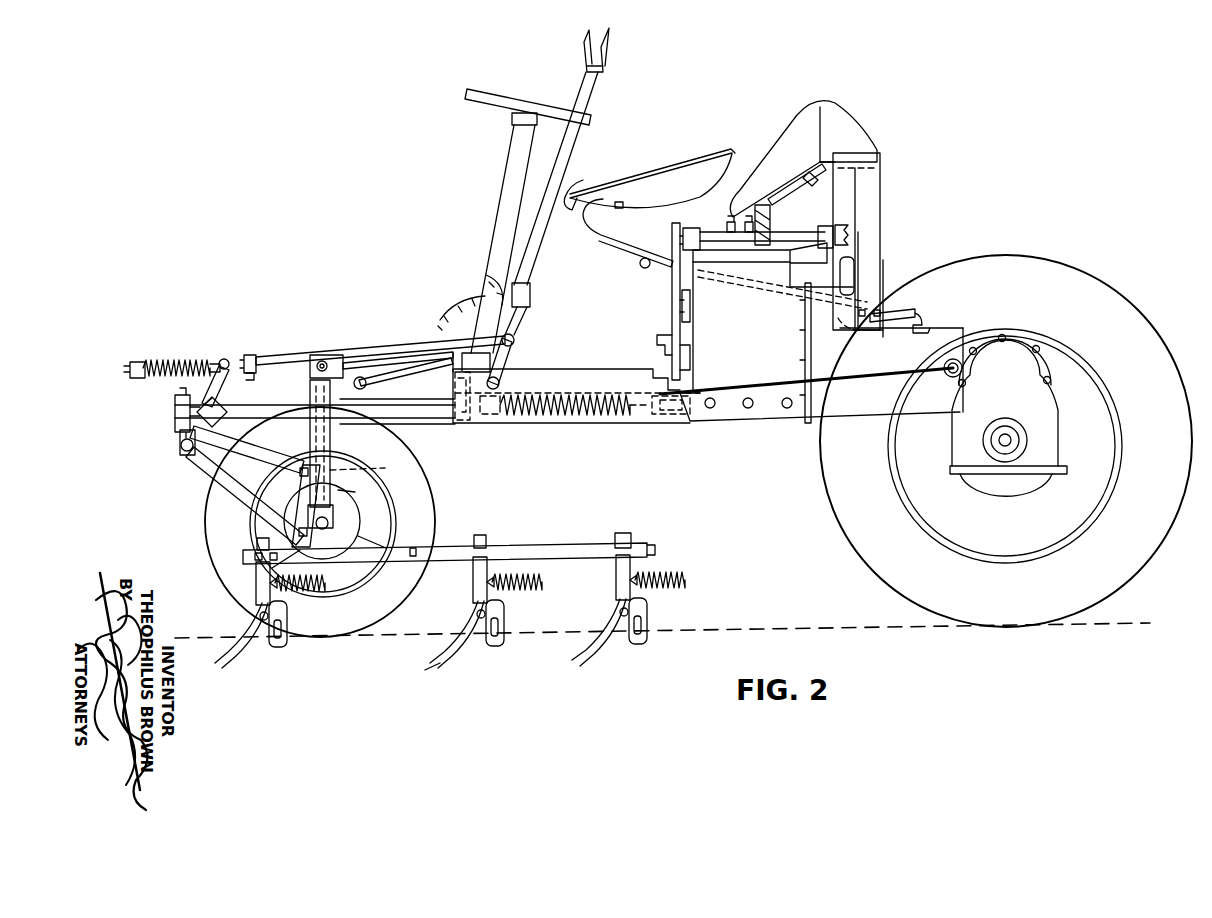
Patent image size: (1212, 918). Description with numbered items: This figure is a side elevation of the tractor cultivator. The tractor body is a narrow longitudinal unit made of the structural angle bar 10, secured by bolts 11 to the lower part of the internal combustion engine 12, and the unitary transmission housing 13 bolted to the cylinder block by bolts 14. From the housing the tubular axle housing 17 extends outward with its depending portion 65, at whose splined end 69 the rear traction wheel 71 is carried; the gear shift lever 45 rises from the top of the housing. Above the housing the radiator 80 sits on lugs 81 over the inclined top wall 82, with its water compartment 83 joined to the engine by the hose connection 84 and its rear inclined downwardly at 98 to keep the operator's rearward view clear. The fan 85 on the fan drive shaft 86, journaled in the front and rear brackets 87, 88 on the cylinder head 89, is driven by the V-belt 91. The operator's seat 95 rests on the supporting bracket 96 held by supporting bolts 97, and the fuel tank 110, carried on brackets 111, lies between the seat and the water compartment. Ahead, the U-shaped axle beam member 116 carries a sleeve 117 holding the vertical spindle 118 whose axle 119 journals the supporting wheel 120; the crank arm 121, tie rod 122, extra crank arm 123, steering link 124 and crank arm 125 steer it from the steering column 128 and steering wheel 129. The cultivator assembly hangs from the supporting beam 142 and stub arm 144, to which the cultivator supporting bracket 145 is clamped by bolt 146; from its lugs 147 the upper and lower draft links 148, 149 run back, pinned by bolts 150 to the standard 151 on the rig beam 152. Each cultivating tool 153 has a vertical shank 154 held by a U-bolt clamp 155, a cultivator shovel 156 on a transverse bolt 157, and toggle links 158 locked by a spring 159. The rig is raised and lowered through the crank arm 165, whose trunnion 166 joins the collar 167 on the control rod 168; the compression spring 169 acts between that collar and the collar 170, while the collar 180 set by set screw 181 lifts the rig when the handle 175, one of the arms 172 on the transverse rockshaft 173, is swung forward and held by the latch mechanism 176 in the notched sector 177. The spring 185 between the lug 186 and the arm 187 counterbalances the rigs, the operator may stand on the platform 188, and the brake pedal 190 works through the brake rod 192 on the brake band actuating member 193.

The structural angle bar 10 is at (700, 420).
The bolts 11 is at (784, 407).
The internal combustion engine 12 is at (780, 317).
The unitary transmission housing 13 is at (900, 335).
The bolts 14 is at (805, 375).
The tubular axle housing 17 is at (1002, 348).
The gear shift lever 45 is at (895, 312).
The depending portion of the axle housing 65 is at (1052, 421).
The splined outer end of stub axle 69 is at (1002, 438).
The rear traction wheel 71 is at (1108, 310).
The radiator 80 is at (880, 218).
The lugs 81 is at (876, 315).
The inclined top wall 82 is at (840, 307).
The water compartment 83 is at (845, 138).
The hose connection 84 is at (790, 188).
The fan 85 is at (838, 270).
The fan drive shaft 86 is at (785, 234).
The front bracket 87 is at (698, 228).
The rear bracket 88 is at (832, 224).
The cylinder head 89 is at (722, 263).
The V-belt 91 is at (672, 325).
The operator's seat 95 is at (680, 170).
The supporting bracket 96 is at (620, 243).
The supporting bolts 97 is at (684, 318).
The inclined rear of water compartment 98 is at (860, 115).
The fuel tank 110 is at (780, 132).
The brackets 111 is at (766, 203).
The U-shaped axle beam member 116 is at (412, 420).
The sleeve 117 is at (332, 444).
The vertical spindle 118 is at (364, 466).
The axle 119 is at (330, 522).
The supporting wheel 120 is at (432, 506).
The crank arm 121 is at (342, 356).
The tie rod 122 is at (372, 379).
The extra crank arm 123 is at (320, 355).
The steering link 124 is at (388, 350).
The crank arm 125 is at (470, 424).
The steering column 128 is at (500, 222).
The steering wheel 129 is at (484, 94).
The supporting beam 142 is at (258, 406).
The stub arm 144 is at (197, 412).
The cultivator supporting bracket 145 is at (202, 400).
The bolt 146 is at (170, 405).
The lugs 147 is at (180, 446).
The upper draft link 148 is at (260, 448).
The lower draft link 149 is at (218, 475).
The bolts 150 is at (303, 468).
The standard 151 is at (293, 518).
The rig beam 152 is at (392, 563).
The cultivating tool 153 is at (238, 615).
The vertical shank 154 is at (256, 578).
The U-bolt clamp 155 is at (486, 540).
The cultivator shovel 156 is at (445, 655).
The transverse bolt 157 is at (482, 618).
The toggle links 158 is at (498, 590).
The spring 159 is at (545, 572).
The crank arm 165 is at (218, 406).
The trunnion 166 is at (226, 358).
The collar 167 is at (214, 355).
The control rod 168 is at (285, 356).
The compression spring 169 is at (155, 360).
The collar 170 is at (133, 362).
The upwardly extending arm 172 is at (515, 340).
The transverse rockshaft 173 is at (500, 378).
The handle 175 is at (580, 92).
The latch mechanism 176 is at (531, 297).
The notched sector 177 is at (490, 295).
The collar 180 is at (262, 352).
The set screw 181 is at (256, 374).
The spring 185 is at (562, 418).
The lug 186 is at (672, 418).
The arm 187 is at (490, 416).
The platform 188 is at (588, 369).
The brake pedal 190 is at (438, 322).
The brake rod 192 is at (842, 385).
The brake band actuating member 193 is at (953, 360).